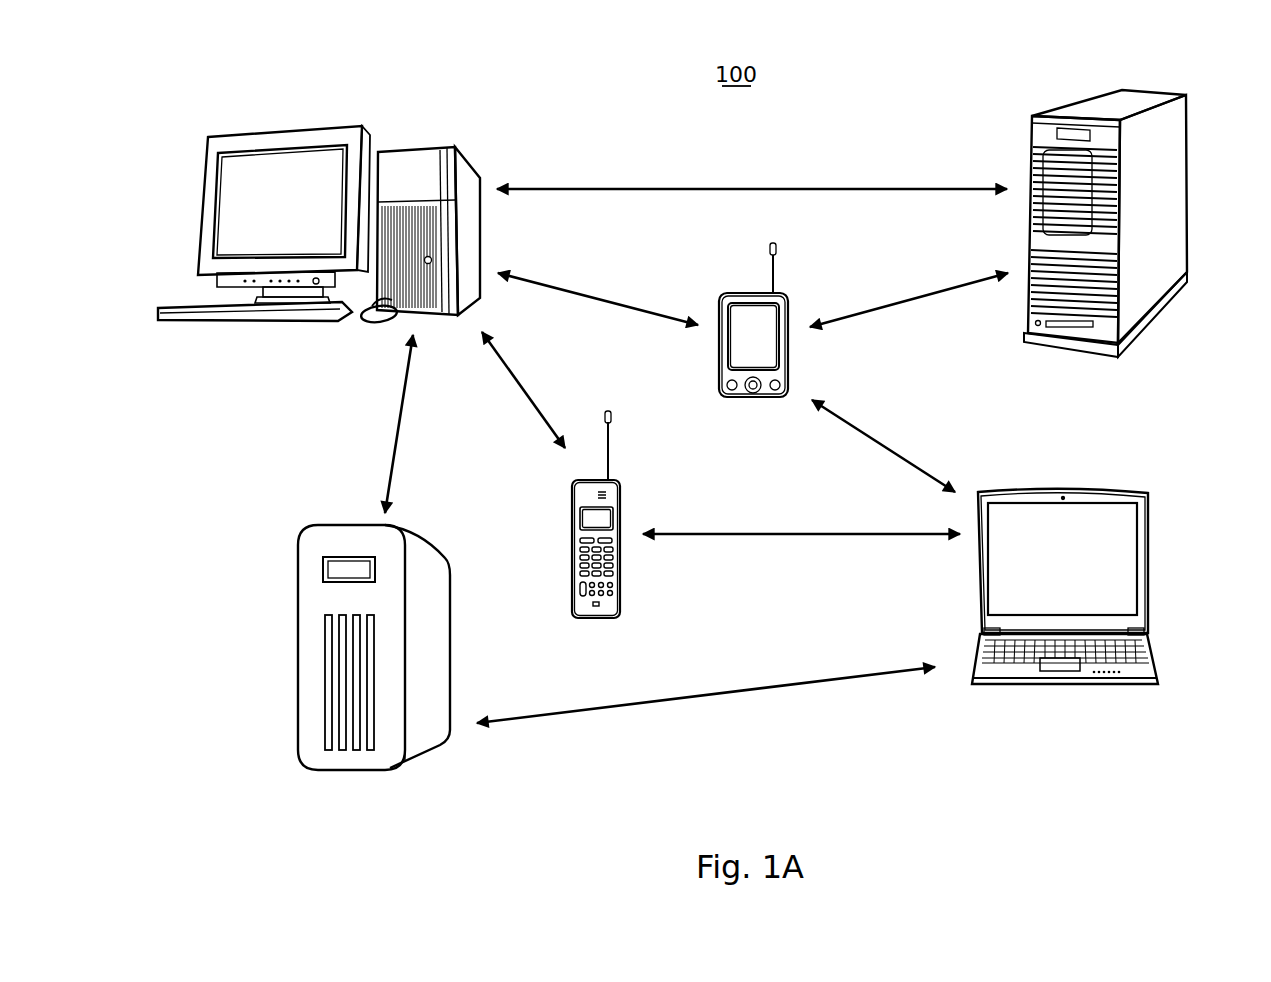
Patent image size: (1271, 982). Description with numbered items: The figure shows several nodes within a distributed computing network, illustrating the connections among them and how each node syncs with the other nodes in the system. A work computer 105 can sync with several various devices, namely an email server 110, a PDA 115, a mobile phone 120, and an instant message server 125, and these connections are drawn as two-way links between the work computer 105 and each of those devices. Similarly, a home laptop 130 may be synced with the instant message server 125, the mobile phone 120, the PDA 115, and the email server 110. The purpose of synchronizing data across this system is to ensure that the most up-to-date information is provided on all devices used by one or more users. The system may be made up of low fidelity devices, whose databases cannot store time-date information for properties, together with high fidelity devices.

The work computer 105 is at (203, 203).
The email server 110 is at (1188, 182).
The PDA 115 is at (752, 293).
The mobile phone 120 is at (572, 497).
The instant message server 125 is at (298, 637).
The home laptop 130 is at (1148, 570).